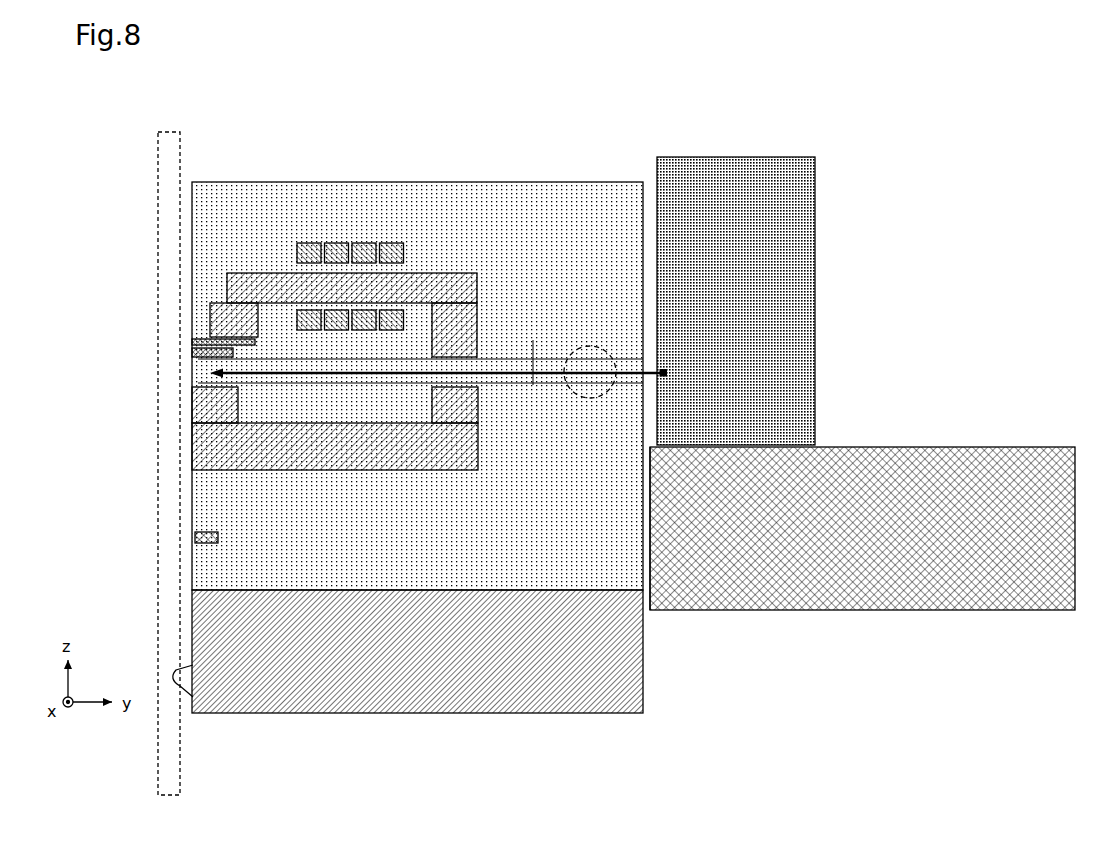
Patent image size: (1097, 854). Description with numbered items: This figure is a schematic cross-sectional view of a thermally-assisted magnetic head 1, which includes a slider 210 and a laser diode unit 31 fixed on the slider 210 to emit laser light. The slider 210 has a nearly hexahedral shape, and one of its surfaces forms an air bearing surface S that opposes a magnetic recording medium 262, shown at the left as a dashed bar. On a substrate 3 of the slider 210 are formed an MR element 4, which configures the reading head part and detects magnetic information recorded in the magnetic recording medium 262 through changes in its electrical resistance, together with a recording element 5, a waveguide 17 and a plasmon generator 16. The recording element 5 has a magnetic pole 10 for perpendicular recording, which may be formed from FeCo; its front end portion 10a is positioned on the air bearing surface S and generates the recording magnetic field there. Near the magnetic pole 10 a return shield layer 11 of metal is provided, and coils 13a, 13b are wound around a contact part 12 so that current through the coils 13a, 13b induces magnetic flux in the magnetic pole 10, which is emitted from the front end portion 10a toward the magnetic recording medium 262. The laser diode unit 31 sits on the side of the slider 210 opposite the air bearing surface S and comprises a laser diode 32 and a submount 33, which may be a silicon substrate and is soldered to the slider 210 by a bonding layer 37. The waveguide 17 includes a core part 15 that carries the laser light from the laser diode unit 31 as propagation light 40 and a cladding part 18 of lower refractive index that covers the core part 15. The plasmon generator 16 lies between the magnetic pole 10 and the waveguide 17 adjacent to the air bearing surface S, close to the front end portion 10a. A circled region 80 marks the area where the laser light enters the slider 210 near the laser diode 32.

The thermally-assisted magnetic head 1 is at (661, 112).
The substrate 3 is at (643, 695).
The MR element 4 is at (195, 540).
The recording element 5 is at (146, 377).
The magnetic pole 10 is at (224, 283).
The front end portion 10a is at (192, 341).
The return shield layer 11 is at (192, 405).
The contact part 12 is at (503, 357).
The coil 13a is at (307, 243).
The coil 13b is at (307, 310).
The core part 15 is at (533, 340).
The plasmon generator 16 is at (192, 353).
The waveguide 17 is at (350, 385).
The cladding part 18 is at (532, 385).
The laser diode unit 31 is at (865, 283).
The laser diode 32 is at (790, 370).
The submount 33 is at (897, 450).
The bonding layer 37 is at (652, 553).
The propagation light 40 is at (312, 385).
The coupling portion 80 is at (590, 398).
The slider 210 is at (412, 160).
The magnetic recording medium 262 is at (155, 163).
The air bearing surface S is at (200, 717).